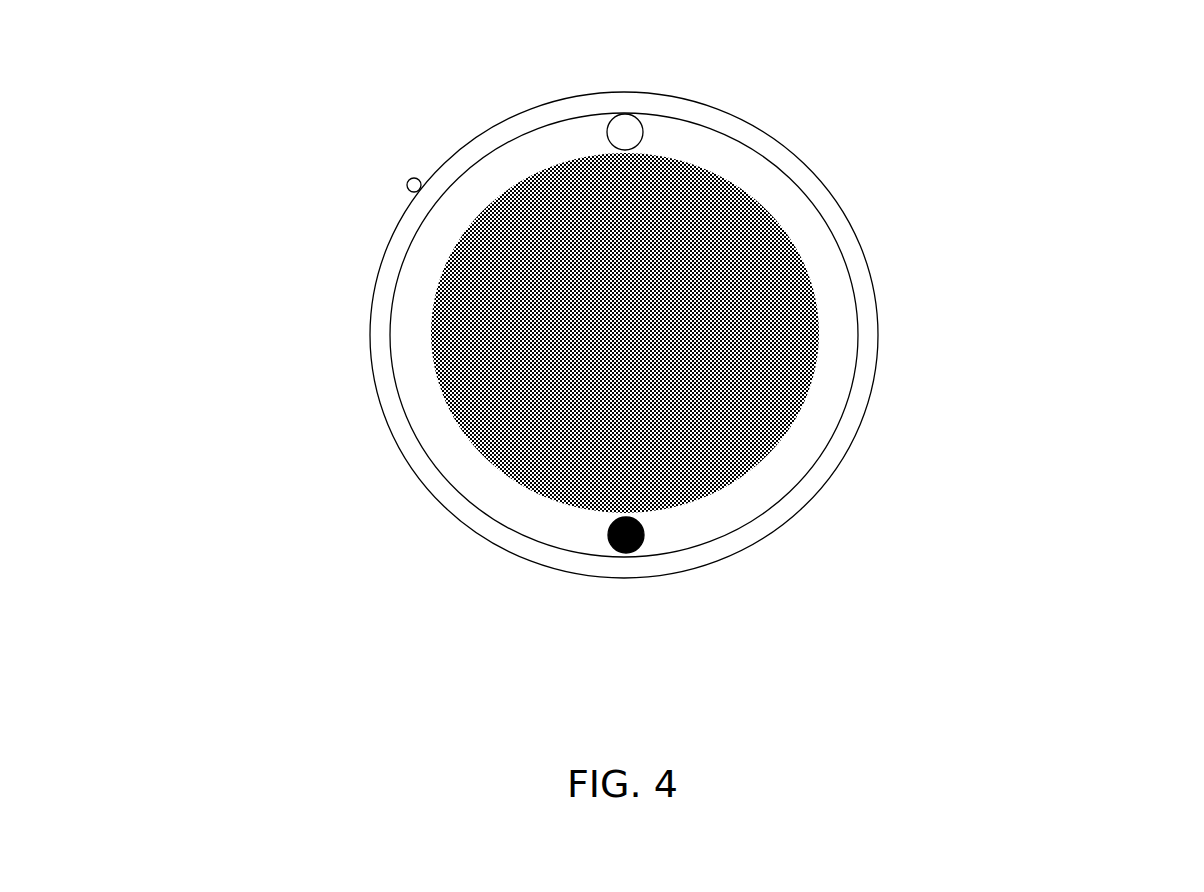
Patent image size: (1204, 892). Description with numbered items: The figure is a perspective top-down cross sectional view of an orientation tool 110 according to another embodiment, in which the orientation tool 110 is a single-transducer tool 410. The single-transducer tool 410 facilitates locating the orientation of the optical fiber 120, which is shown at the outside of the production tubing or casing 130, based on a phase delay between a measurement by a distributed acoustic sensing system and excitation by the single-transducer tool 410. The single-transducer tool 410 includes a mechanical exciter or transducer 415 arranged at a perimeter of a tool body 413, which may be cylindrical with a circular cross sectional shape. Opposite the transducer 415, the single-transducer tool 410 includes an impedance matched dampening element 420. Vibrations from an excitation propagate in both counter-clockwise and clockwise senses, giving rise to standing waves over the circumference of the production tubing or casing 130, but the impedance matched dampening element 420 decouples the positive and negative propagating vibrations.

The orientation tool 110 is at (1083, 152).
The optical fiber 120 is at (407, 183).
The production tubing or casing 130 is at (857, 428).
The single-transducer tool 410 is at (1148, 62).
The tool body 413 is at (547, 357).
The transducer 415 is at (648, 132).
The impedance matched dampening element 420 is at (604, 552).